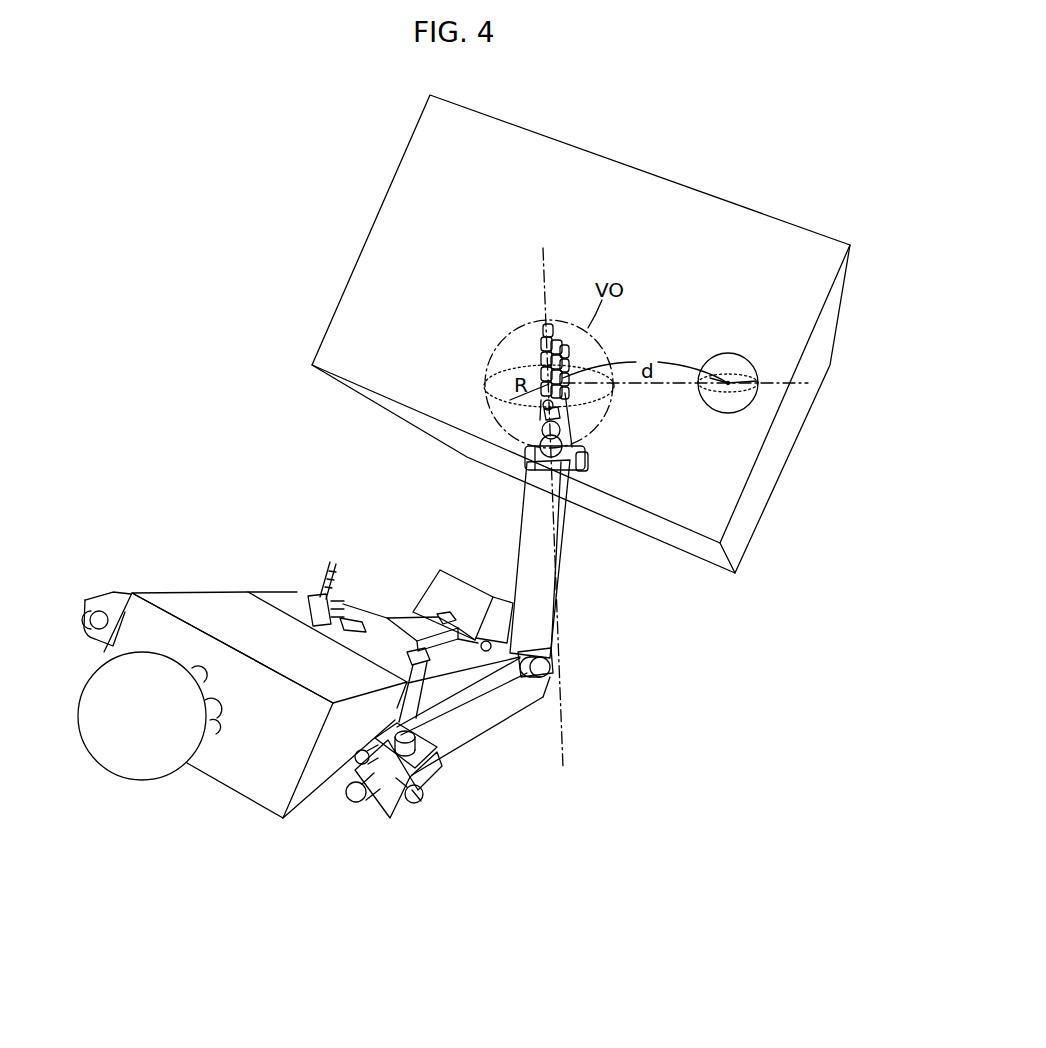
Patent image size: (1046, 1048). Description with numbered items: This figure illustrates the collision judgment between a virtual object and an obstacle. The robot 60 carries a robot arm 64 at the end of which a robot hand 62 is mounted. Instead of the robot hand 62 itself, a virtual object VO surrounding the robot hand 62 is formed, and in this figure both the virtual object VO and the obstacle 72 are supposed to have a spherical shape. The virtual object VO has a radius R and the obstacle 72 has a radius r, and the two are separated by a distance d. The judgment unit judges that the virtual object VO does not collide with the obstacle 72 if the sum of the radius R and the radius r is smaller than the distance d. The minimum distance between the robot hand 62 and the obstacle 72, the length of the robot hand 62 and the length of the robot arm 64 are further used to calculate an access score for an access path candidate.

The robot 60 is at (132, 792).
The robot hand 62 is at (570, 412).
The robot arm 64 is at (565, 563).
The obstacle 72 is at (728, 353).